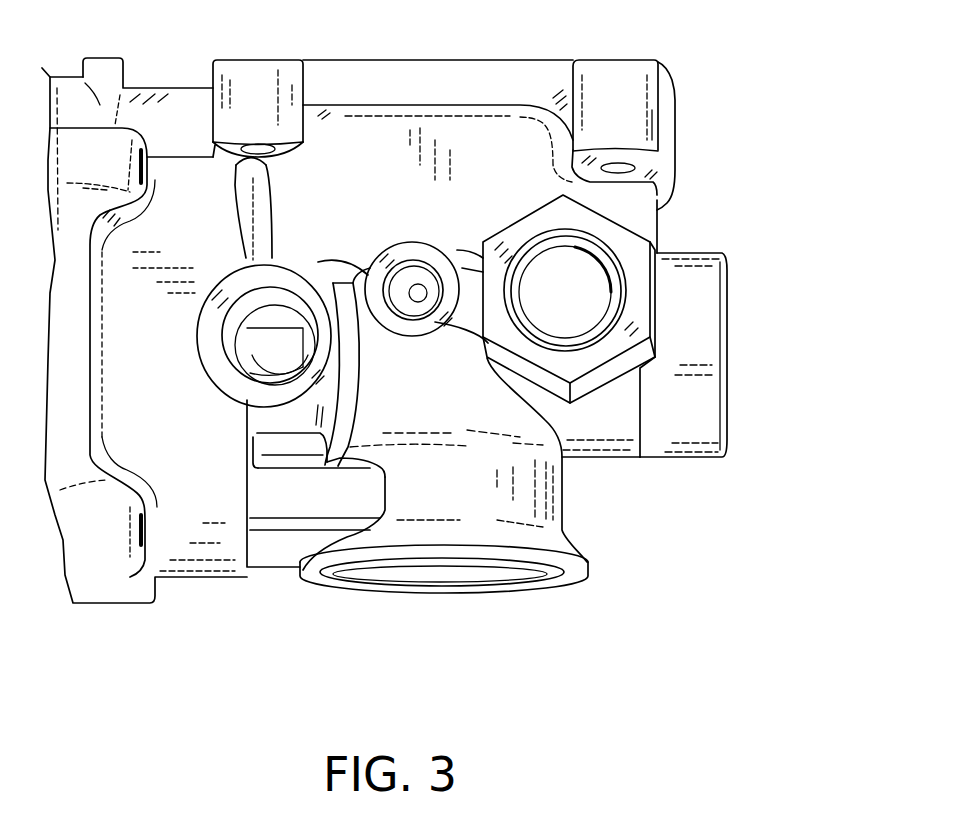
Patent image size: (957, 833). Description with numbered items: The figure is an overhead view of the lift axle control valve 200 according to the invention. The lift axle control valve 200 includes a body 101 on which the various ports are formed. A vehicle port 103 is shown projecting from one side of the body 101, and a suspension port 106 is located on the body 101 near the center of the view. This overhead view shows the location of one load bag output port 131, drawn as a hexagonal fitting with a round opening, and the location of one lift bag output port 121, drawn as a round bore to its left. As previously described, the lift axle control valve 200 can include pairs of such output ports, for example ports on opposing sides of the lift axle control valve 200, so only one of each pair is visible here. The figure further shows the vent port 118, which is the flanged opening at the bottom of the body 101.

The body 101 is at (158, 87).
The vehicle port 103 is at (728, 357).
The suspension port 106 is at (408, 258).
The vent port 118 is at (427, 597).
The lift bag output port 121 is at (200, 350).
The load bag output port 131 is at (523, 242).
The lift axle control valve 200 is at (177, 653).